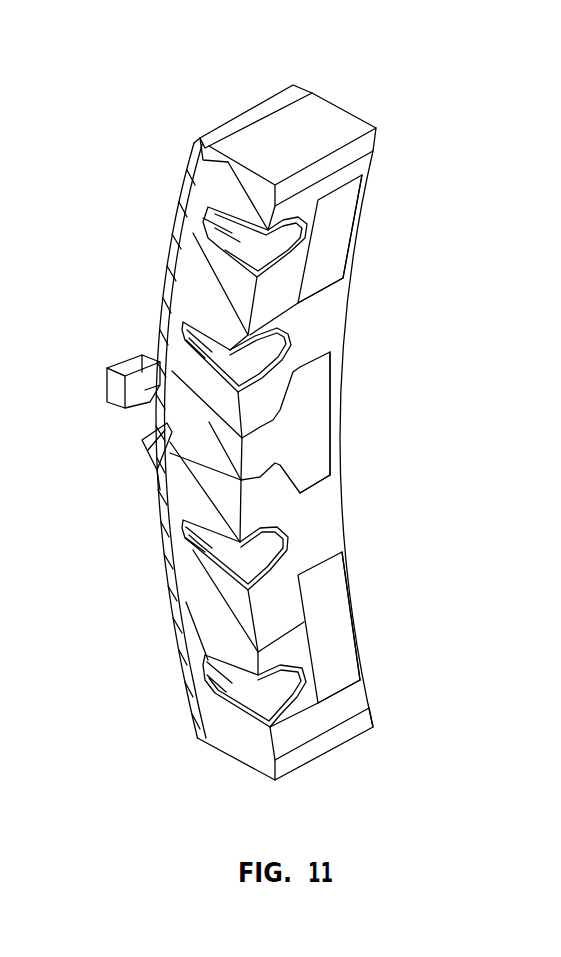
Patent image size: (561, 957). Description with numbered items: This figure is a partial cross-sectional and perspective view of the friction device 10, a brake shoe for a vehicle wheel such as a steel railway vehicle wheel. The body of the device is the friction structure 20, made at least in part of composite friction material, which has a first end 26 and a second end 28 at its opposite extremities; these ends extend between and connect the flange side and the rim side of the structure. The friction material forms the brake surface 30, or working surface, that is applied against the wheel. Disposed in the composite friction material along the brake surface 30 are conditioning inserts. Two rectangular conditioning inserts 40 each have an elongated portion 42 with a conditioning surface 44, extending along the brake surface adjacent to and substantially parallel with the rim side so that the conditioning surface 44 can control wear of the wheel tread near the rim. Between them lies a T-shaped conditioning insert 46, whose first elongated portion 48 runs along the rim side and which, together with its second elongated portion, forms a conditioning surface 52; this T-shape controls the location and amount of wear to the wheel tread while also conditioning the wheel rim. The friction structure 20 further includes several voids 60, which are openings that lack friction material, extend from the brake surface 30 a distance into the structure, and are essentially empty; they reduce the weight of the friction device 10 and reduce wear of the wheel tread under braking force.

The friction device 10 is at (414, 91).
The friction structure 20 is at (198, 502).
The first end 26 is at (323, 117).
The second end 28 is at (317, 760).
The brake surface 30 is at (358, 695).
The conditioning insert 40 is at (340, 202).
The elongated portion 42 is at (335, 233).
The conditioning surface 44 is at (330, 267).
The T-shaped conditioning insert 46 is at (317, 383).
The first elongated portion 48 is at (317, 428).
The conditioning surface 52 is at (317, 458).
The void 60 is at (240, 243).